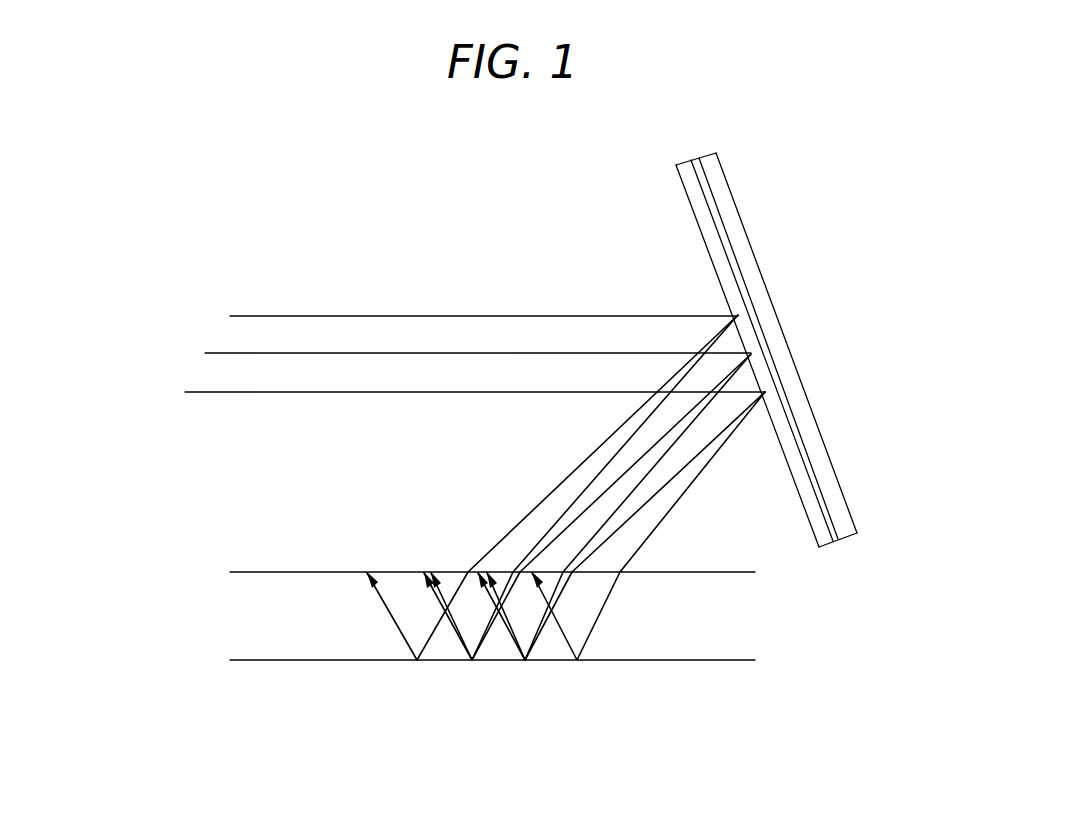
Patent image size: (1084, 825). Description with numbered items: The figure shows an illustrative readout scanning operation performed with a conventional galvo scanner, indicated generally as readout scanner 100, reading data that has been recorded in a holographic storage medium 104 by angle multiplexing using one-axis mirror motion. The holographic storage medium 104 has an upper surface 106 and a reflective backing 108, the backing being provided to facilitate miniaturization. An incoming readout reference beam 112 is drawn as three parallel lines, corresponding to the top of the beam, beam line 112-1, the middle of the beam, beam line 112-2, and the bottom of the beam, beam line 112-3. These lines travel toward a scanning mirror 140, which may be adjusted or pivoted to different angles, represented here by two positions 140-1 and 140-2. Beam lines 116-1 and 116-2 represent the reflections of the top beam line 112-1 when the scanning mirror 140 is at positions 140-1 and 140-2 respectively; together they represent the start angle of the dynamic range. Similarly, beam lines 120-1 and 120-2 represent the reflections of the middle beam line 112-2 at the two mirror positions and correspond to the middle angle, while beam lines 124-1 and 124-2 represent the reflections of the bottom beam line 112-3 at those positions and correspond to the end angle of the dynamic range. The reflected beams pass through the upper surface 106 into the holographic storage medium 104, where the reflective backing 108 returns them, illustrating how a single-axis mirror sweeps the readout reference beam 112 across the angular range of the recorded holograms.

The readout scanner 100 is at (154, 174).
The holographic storage medium 104 is at (186, 628).
The upper surface 106 is at (283, 571).
The reflective backing 108 is at (262, 660).
The incoming readout reference beam 112 is at (163, 355).
The top beam line 112-1 is at (405, 316).
The middle beam line 112-2 is at (310, 353).
The bottom beam line 112-3 is at (252, 392).
The beam line of scan 116 116-1 is at (427, 645).
The beam line of scan 116 116-2 is at (676, 384).
The beam line of scan 120 120-1 is at (586, 507).
The beam line of scan 120 120-2 is at (646, 468).
The beam line of scan 124 124-1 is at (619, 527).
The beam line of scan 124 124-2 is at (733, 430).
The scanning mirror 140 is at (826, 220).
The mirror position 140-1 is at (844, 497).
The mirror position 140-2 is at (730, 206).